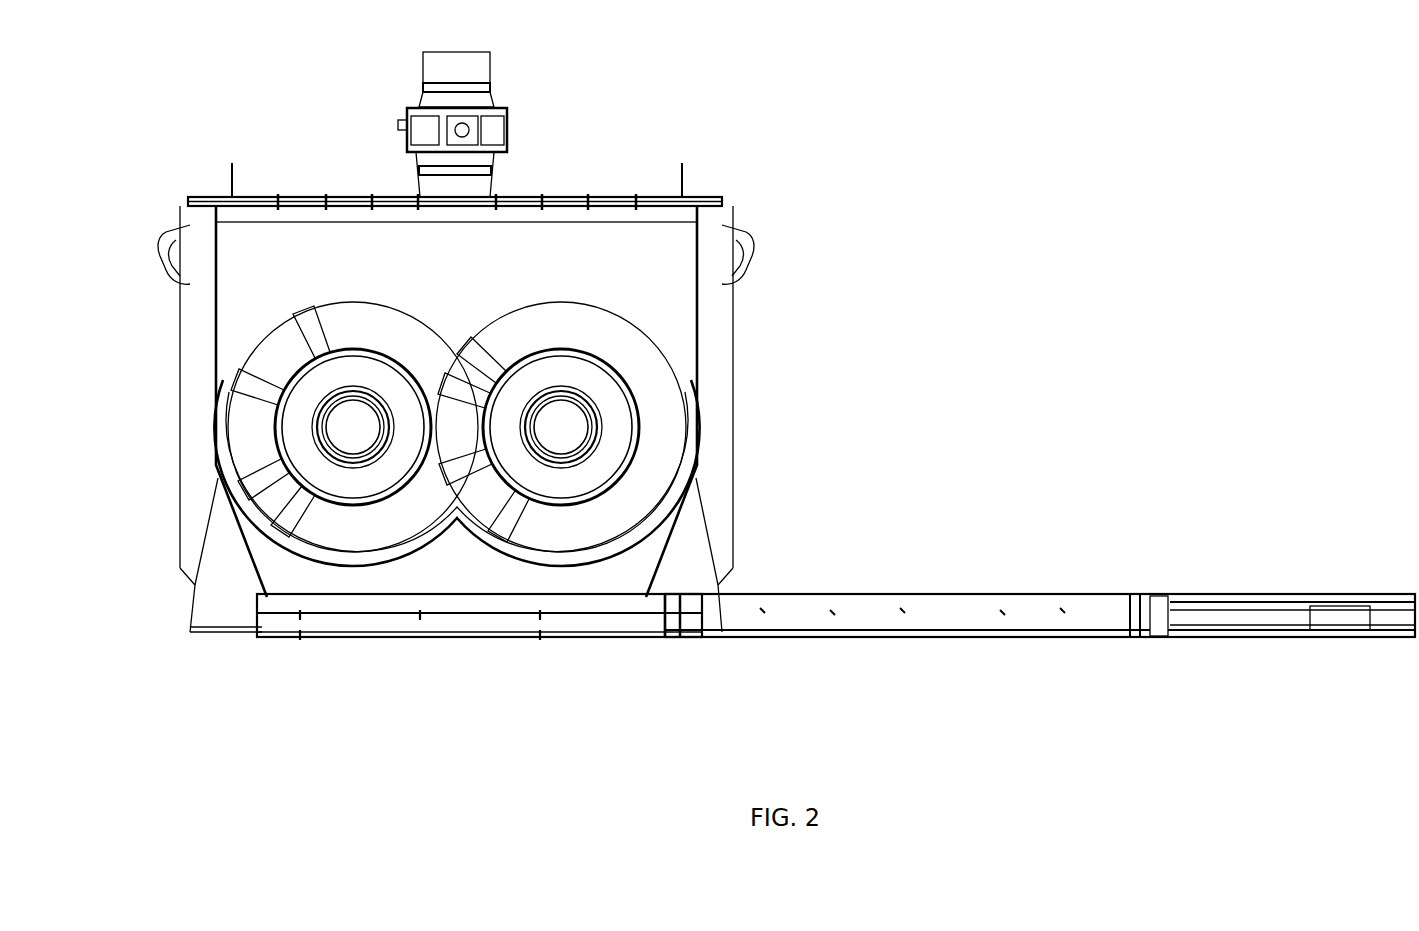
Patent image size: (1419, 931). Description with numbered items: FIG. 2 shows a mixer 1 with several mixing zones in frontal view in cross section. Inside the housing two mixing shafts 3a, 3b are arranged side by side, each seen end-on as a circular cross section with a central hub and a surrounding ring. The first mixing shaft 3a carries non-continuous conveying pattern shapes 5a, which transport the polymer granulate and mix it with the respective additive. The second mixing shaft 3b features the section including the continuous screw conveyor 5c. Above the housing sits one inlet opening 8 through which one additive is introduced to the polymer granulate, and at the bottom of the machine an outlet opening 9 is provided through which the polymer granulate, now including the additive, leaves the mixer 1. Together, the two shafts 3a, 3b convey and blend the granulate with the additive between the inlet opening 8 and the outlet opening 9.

The mixer 1 is at (740, 434).
The first mixing shaft 3a is at (353, 438).
The second mixing shaft 3b is at (562, 438).
The non-continuous conveying pattern shapes 5a is at (287, 518).
The continuous screw conveyor 5c is at (624, 521).
The inlet opening for additive 8 is at (497, 78).
The outlet opening for polymer granulate 9 is at (771, 593).